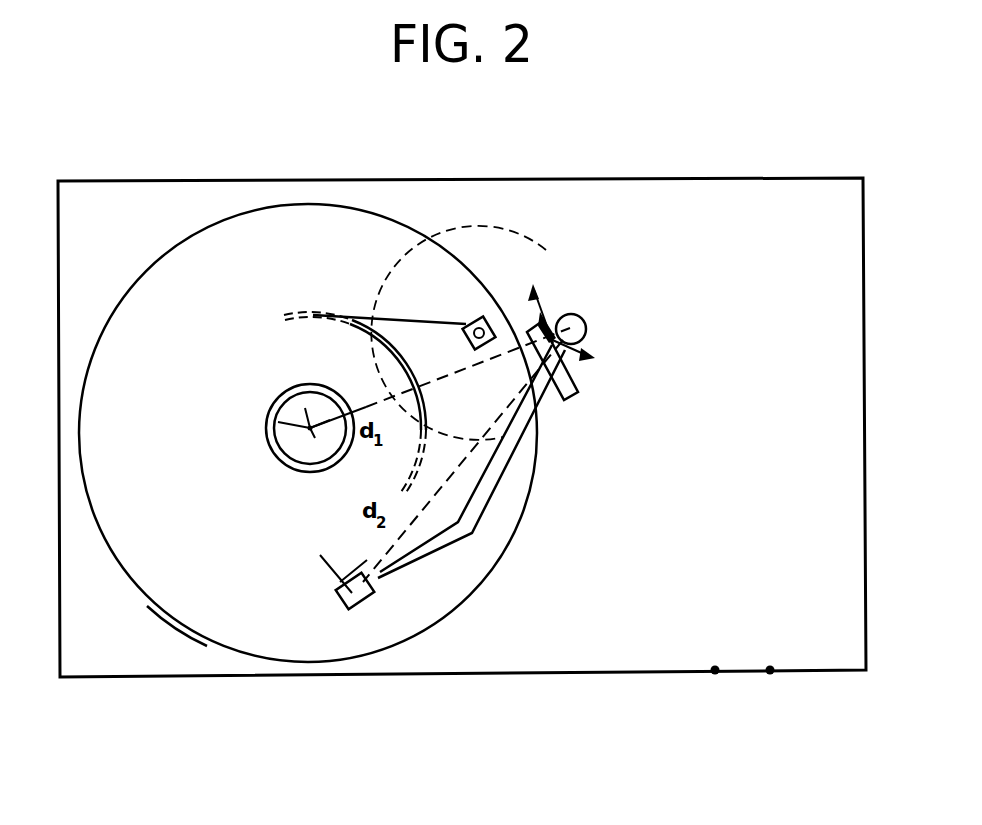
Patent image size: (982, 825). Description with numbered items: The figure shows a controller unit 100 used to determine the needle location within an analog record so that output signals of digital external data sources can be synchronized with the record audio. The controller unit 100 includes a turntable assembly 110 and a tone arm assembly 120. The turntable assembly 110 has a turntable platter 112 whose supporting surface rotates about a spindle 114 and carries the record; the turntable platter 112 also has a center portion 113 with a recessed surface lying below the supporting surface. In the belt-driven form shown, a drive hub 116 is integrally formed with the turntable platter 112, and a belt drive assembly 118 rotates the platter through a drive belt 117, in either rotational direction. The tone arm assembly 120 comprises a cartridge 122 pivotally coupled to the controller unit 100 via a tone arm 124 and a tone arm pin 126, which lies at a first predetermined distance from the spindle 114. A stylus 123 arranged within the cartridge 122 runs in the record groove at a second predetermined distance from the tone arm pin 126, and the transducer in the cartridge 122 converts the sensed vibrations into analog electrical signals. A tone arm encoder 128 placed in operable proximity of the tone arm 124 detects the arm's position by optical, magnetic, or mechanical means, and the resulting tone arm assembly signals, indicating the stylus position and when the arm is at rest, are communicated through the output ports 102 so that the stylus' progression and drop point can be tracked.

The controller unit 100 is at (854, 153).
The output ports 102 is at (770, 674).
The turntable assembly 110 is at (242, 345).
The turntable platter 112 is at (190, 580).
The center portion 113 is at (315, 452).
The spindle 114 is at (270, 416).
The drive hub 116 is at (382, 355).
The drive belt 117 is at (357, 314).
The belt drive assembly 118 is at (487, 343).
The tone arm assembly 120 is at (651, 397).
The cartridge 122 is at (367, 603).
The stylus 123 is at (342, 583).
The tone arm 124 is at (507, 463).
The tone arm pin 126 is at (572, 322).
The tone arm encoder 128 is at (570, 397).